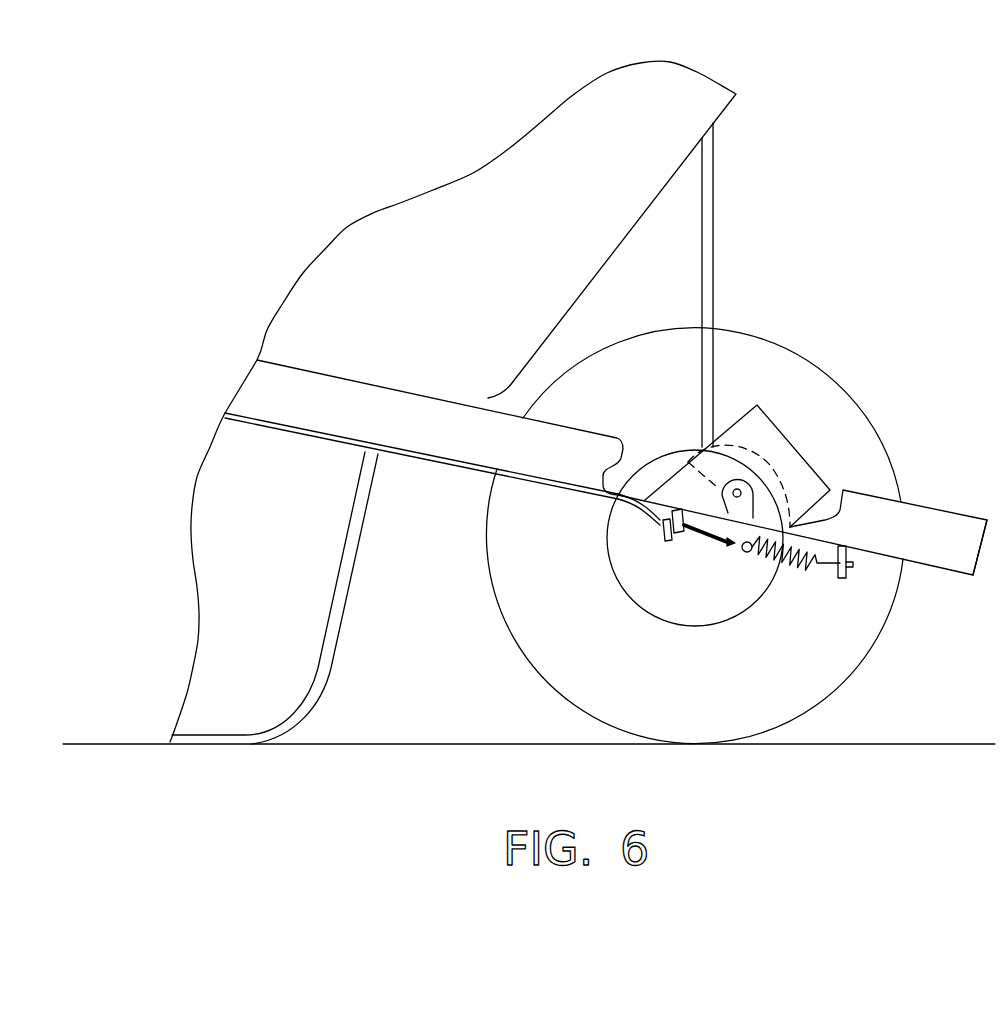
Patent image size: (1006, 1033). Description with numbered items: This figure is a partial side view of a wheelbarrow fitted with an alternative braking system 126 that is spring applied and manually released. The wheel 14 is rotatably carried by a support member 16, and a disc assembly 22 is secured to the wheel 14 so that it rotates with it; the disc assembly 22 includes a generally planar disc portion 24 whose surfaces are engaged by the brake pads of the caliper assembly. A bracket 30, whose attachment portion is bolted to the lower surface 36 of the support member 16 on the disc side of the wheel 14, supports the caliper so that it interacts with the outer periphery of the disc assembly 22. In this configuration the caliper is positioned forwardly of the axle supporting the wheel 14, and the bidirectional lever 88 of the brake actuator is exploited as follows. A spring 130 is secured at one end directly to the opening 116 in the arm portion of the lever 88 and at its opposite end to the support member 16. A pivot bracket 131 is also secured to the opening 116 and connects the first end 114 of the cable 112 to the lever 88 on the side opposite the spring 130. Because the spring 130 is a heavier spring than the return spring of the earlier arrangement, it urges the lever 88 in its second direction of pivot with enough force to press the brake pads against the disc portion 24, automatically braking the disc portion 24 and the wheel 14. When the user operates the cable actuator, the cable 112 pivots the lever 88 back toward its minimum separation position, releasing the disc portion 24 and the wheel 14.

The wheel 14 is at (775, 372).
The support member 16 is at (937, 527).
The disc assembly 22 is at (648, 608).
The disc portion 24 is at (657, 558).
The bracket 30 is at (681, 483).
The lower surface 36 is at (947, 572).
The lever 88 is at (757, 503).
The cable 112 is at (470, 472).
The first end 114 is at (697, 538).
The opening 116 is at (750, 553).
The braking system 126 is at (803, 402).
The spring 130 is at (813, 568).
The pivot bracket 131 is at (743, 553).